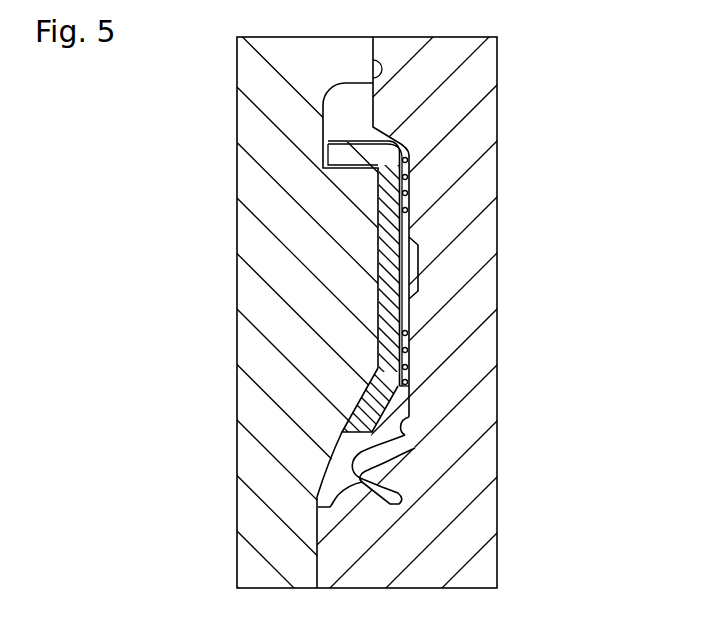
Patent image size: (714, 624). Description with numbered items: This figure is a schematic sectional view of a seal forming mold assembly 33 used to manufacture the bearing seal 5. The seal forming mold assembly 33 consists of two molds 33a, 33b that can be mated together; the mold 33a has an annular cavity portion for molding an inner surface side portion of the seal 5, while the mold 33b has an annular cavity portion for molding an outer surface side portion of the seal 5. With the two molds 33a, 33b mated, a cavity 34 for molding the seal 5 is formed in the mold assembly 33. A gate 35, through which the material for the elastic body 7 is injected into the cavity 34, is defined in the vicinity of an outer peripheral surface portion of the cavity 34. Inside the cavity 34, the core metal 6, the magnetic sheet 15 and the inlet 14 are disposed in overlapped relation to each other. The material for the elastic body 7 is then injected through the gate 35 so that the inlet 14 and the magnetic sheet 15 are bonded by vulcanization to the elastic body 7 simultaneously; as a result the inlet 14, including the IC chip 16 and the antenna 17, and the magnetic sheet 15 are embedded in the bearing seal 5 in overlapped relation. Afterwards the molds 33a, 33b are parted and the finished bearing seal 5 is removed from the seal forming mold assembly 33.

The bearing seal 5 is at (402, 140).
The core metal 6 is at (385, 328).
The elastic body 7 is at (343, 117).
The inlet 14 is at (418, 262).
The magnetic sheet 15 is at (413, 337).
The IC chip 16 is at (410, 288).
The antenna 17 is at (405, 388).
The seal forming mold assembly 33 is at (357, 312).
The mold 33a is at (348, 275).
The mold 33b is at (473, 190).
The cavity 34 is at (398, 443).
The gate 35 is at (385, 73).